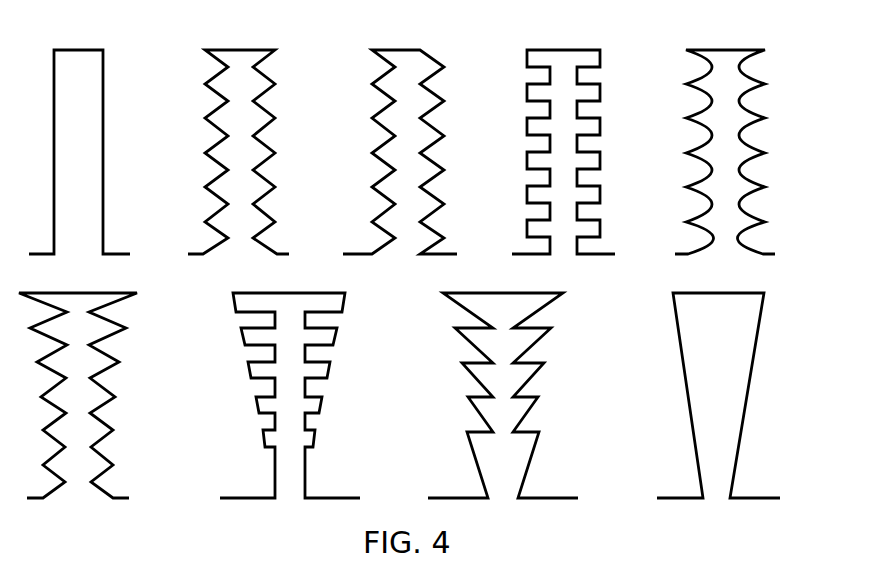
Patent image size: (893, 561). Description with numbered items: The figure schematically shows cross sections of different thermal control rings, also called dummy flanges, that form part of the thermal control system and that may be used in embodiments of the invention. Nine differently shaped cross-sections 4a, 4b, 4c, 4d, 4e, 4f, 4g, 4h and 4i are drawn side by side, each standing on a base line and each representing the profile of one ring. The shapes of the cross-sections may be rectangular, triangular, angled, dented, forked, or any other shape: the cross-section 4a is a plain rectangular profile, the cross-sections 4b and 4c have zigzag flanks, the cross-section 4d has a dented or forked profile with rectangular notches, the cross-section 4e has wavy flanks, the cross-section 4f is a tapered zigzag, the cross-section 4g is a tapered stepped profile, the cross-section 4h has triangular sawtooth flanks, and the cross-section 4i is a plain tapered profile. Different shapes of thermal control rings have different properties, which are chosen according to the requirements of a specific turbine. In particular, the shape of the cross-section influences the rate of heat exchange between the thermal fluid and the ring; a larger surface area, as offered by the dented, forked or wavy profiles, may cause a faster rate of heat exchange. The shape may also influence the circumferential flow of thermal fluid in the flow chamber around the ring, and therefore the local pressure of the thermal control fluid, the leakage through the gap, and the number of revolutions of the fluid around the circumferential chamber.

The thermal control ring cross-section 4a is at (87, 100).
The thermal control ring cross-section 4b is at (253, 112).
The thermal control ring cross-section 4c is at (415, 102).
The thermal control ring cross-section 4d is at (588, 95).
The thermal control ring cross-section 4e is at (738, 117).
The thermal control ring cross-section 4f is at (98, 358).
The thermal control ring cross-section 4g is at (333, 337).
The thermal control ring cross-section 4h is at (532, 342).
The thermal control ring cross-section 4i is at (733, 385).